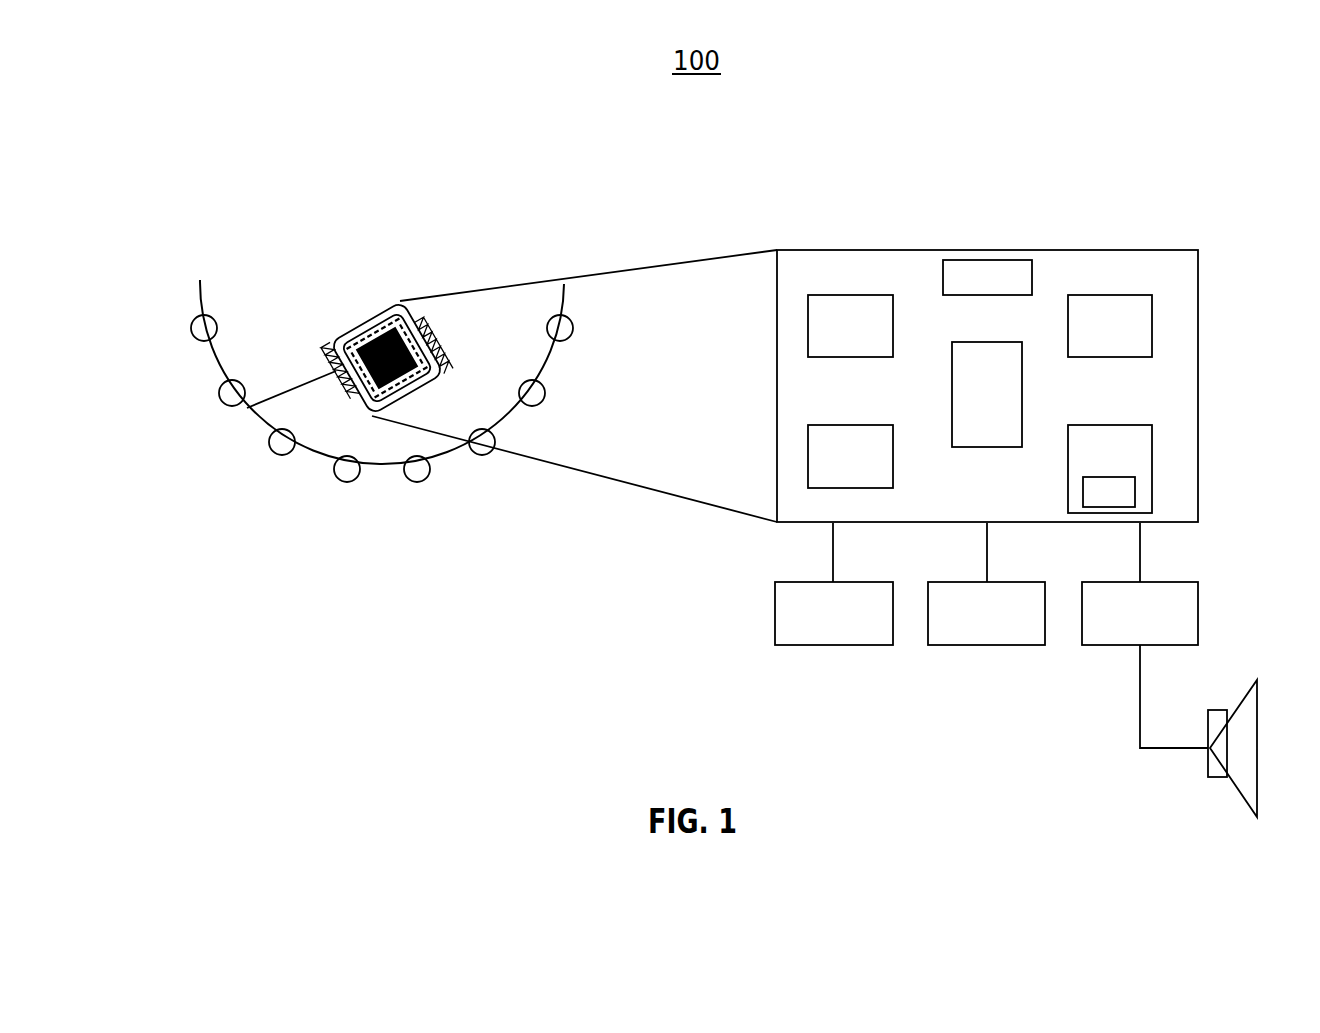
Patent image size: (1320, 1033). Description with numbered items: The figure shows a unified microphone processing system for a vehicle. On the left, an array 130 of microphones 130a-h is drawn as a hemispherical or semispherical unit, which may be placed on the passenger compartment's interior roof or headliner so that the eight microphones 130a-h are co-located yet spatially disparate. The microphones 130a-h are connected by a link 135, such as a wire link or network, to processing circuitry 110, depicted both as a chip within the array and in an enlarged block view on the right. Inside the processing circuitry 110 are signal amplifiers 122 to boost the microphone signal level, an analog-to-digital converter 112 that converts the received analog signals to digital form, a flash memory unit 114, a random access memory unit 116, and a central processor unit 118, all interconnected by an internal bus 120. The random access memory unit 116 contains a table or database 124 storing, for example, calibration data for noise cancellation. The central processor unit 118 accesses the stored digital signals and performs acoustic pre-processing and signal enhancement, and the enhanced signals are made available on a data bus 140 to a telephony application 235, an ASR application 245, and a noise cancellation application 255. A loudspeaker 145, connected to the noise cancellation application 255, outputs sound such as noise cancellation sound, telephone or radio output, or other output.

The processing circuitry 110 is at (337, 327).
The analog-to-digital (A/D) converter 112 is at (882, 293).
The flash memory unit 114 is at (1143, 293).
The random access memory unit 116 is at (1143, 425).
The central processor unit 118 is at (1015, 340).
The internal bus 120 is at (882, 425).
The signal amplifiers 122 is at (1010, 289).
The table or database 124 is at (1137, 492).
The array of microphones 130 is at (245, 222).
The microphones 130a-h is at (224, 414).
The link 135 is at (303, 388).
The data bus 140 is at (833, 572).
The loudspeaker 145 is at (1240, 798).
The telephony application 235 is at (859, 627).
The ASR application 245 is at (1012, 627).
The noise cancellation application 255 is at (1165, 627).